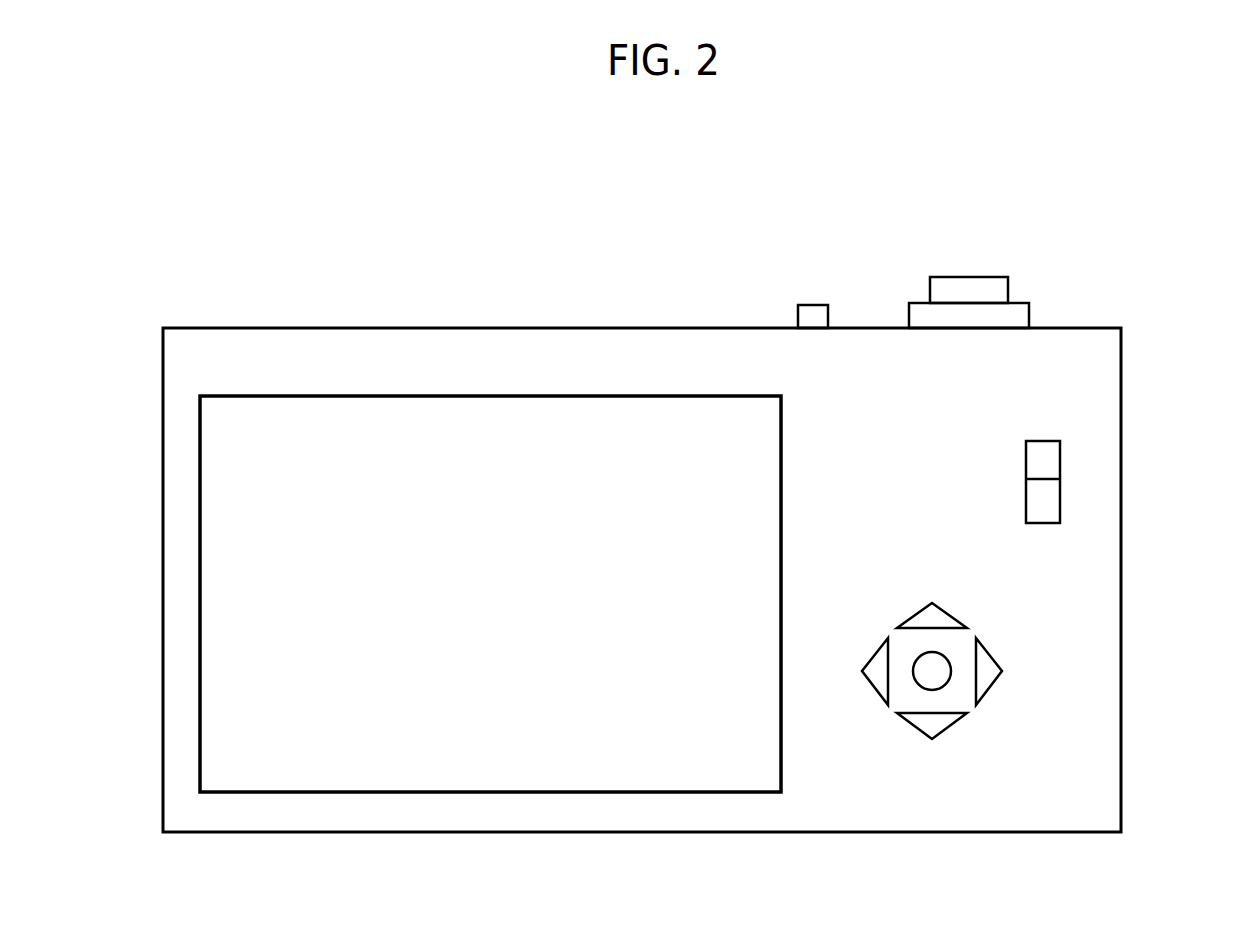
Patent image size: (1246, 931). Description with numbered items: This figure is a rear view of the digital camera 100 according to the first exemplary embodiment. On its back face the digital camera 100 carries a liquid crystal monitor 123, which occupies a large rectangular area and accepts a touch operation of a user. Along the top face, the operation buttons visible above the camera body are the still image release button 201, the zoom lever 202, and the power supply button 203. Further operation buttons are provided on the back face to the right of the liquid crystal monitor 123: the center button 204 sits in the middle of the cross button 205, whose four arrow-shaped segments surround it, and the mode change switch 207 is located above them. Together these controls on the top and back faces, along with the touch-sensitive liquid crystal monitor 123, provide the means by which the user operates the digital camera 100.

The digital camera 100 is at (642, 473).
The liquid crystal monitor 123 is at (387, 427).
The still image release button 201 is at (990, 285).
The zoom lever 202 is at (1020, 316).
The power supply button 203 is at (786, 276).
The center button 204 is at (932, 677).
The cross button 205 is at (930, 723).
The mode change switch 207 is at (1047, 500).